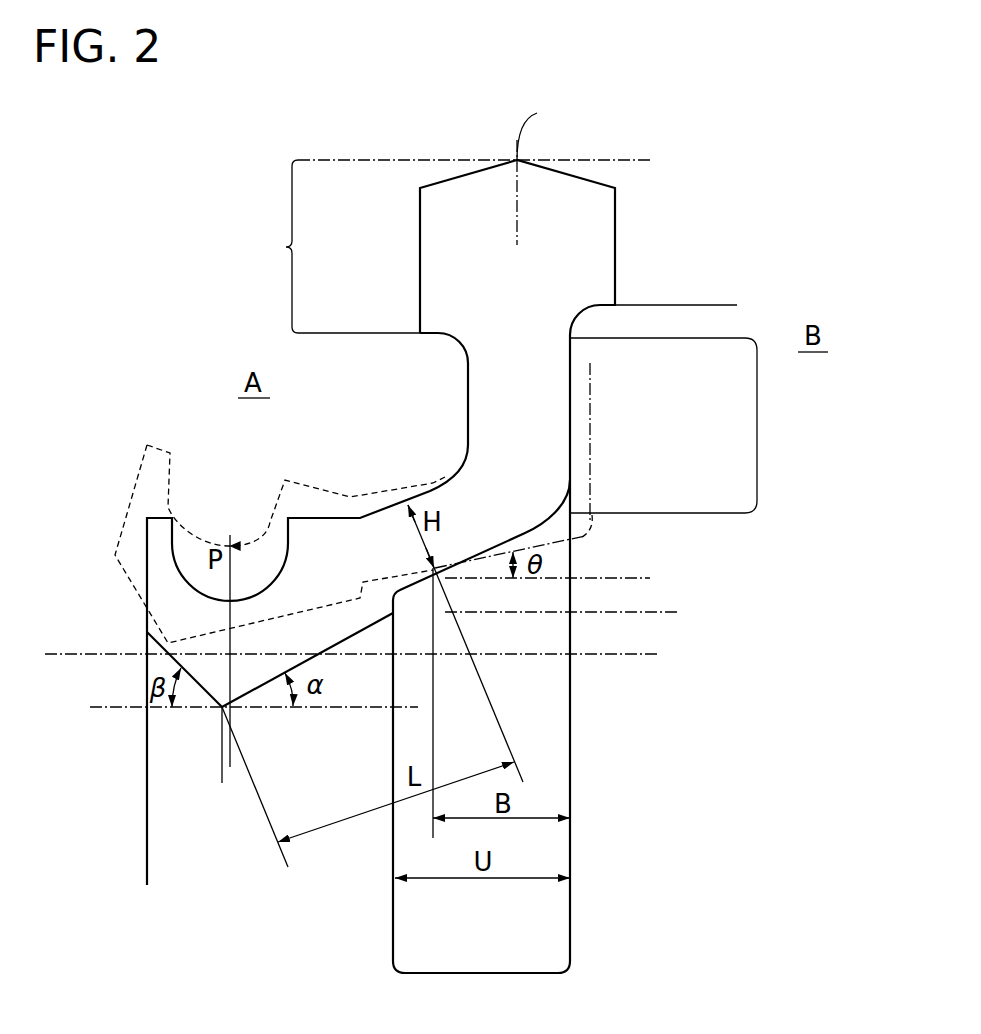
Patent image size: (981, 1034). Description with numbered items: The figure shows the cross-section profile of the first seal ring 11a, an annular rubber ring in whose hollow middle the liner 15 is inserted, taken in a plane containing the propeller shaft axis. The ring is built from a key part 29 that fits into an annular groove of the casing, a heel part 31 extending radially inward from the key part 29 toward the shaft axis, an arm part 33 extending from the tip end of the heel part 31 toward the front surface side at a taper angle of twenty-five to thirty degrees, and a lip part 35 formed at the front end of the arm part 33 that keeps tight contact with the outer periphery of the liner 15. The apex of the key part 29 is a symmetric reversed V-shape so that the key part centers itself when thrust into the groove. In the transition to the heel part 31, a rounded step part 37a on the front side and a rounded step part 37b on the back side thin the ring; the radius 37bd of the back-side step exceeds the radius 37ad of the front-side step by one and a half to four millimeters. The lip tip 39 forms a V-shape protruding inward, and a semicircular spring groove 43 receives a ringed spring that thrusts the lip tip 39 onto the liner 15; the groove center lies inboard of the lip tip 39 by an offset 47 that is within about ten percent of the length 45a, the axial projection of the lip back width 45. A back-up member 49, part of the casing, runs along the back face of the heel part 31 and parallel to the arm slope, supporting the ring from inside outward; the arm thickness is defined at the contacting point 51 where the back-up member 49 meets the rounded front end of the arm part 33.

The first seal ring 11a is at (678, 143).
The liner 15 is at (628, 657).
The key part 29 is at (449, 211).
The heel part 31 is at (754, 338).
The arm part 33 is at (570, 972).
The lip part 35 is at (147, 896).
The step part on front surface side 37a is at (455, 342).
The radius of inner periphery of front-side step part 37ad is at (335, 333).
The step part on back surface side 37b is at (583, 312).
The radius of inner periphery of back-side step part 37bd is at (712, 305).
The lip tip 39 is at (212, 715).
The spring groove 43 is at (290, 545).
The lip back width 45 is at (424, 636).
The orthogonal projection length of lip back width 45a is at (393, 777).
The offset 47 is at (263, 760).
The back-up member 49 is at (583, 537).
The contacting point 51 is at (443, 565).